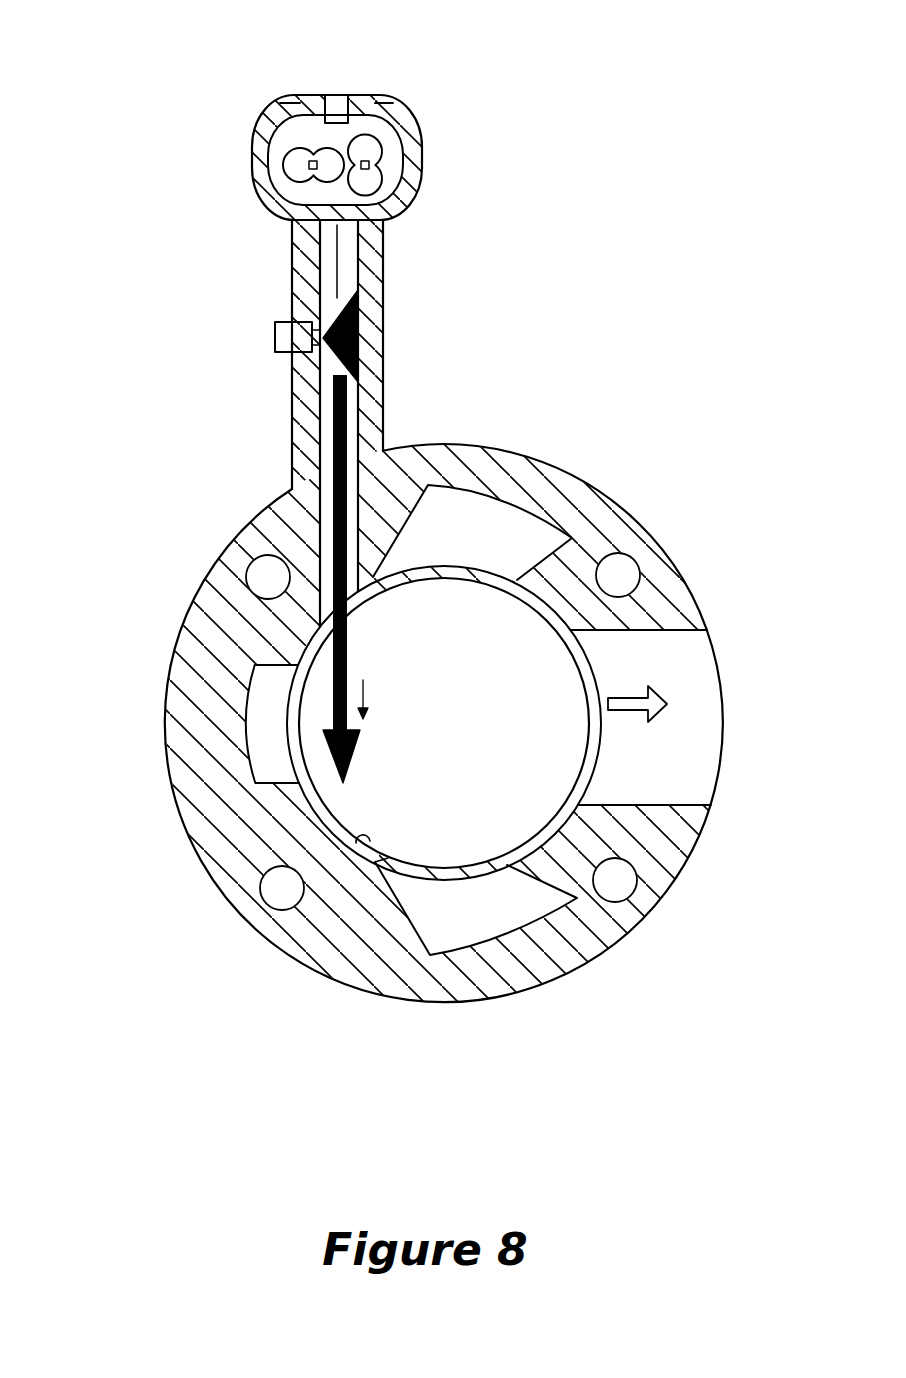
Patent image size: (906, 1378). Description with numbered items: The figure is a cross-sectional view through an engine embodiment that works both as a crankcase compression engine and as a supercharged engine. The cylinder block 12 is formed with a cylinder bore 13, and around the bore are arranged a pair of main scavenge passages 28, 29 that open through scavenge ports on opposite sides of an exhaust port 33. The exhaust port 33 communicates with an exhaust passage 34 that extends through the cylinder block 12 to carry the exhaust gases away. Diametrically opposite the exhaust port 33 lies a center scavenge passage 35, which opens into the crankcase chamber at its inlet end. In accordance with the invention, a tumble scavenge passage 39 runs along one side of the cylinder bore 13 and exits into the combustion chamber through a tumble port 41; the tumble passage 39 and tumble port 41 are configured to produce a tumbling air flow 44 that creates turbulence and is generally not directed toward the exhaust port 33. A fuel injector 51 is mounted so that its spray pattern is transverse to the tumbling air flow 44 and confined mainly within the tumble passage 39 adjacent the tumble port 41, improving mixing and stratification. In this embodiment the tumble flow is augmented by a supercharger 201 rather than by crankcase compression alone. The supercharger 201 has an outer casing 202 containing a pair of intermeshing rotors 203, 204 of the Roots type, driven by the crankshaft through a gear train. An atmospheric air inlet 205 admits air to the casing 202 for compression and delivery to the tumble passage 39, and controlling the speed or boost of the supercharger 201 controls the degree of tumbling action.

The cylinder block 12 is at (521, 470).
The cylinder bore 13 is at (357, 845).
The main scavenge passage 28 is at (450, 550).
The main scavenge passage 29 is at (452, 898).
The exhaust port 33 is at (570, 790).
The exhaust passage 34 is at (622, 746).
The center scavenge passage 35 is at (258, 740).
The tumble scavenge passage 39 is at (330, 365).
The tumble port 41 is at (335, 624).
The tumbling air flow 44 is at (363, 693).
The fuel injector 51 is at (288, 338).
The supercharger 201 is at (453, 689).
The outer casing 202 is at (272, 147).
The intermeshing rotor 203 is at (296, 167).
The intermeshing rotor 204 is at (365, 146).
The atmospheric air inlet 205 is at (345, 96).